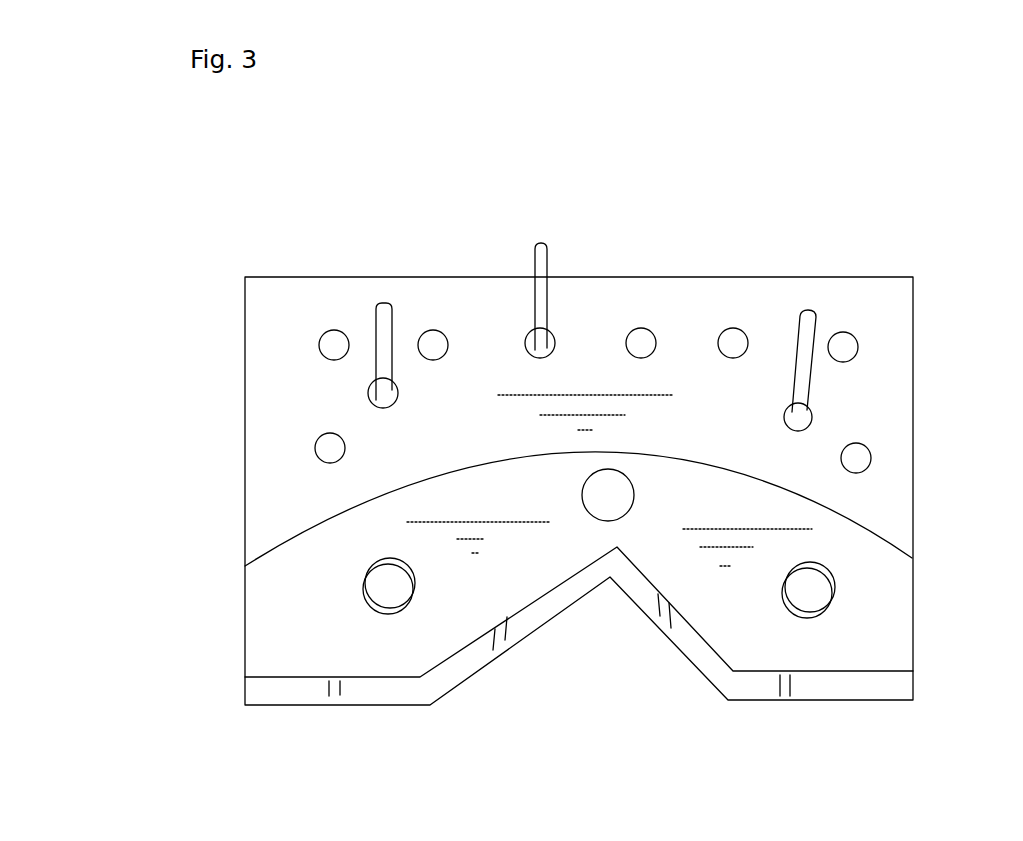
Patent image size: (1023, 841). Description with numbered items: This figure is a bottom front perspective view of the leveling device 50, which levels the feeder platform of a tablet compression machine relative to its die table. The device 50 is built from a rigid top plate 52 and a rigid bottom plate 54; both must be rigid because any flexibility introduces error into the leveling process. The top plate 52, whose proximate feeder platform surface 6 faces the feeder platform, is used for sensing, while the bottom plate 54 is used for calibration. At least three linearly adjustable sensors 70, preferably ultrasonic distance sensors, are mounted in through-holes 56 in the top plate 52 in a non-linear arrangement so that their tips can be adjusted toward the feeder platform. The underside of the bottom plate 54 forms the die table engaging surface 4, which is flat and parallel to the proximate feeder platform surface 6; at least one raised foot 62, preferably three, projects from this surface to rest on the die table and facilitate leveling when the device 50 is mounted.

The die table engaging surface 4 is at (142, 650).
The proximate feeder platform surface 6 is at (235, 163).
The leveling device 50 is at (880, 43).
The top plate 52 is at (798, 300).
The bottom plate 54 is at (868, 600).
The through-holes 56 is at (813, 412).
The raised foot 62 is at (390, 592).
The adjustable sensors 70 is at (380, 300).